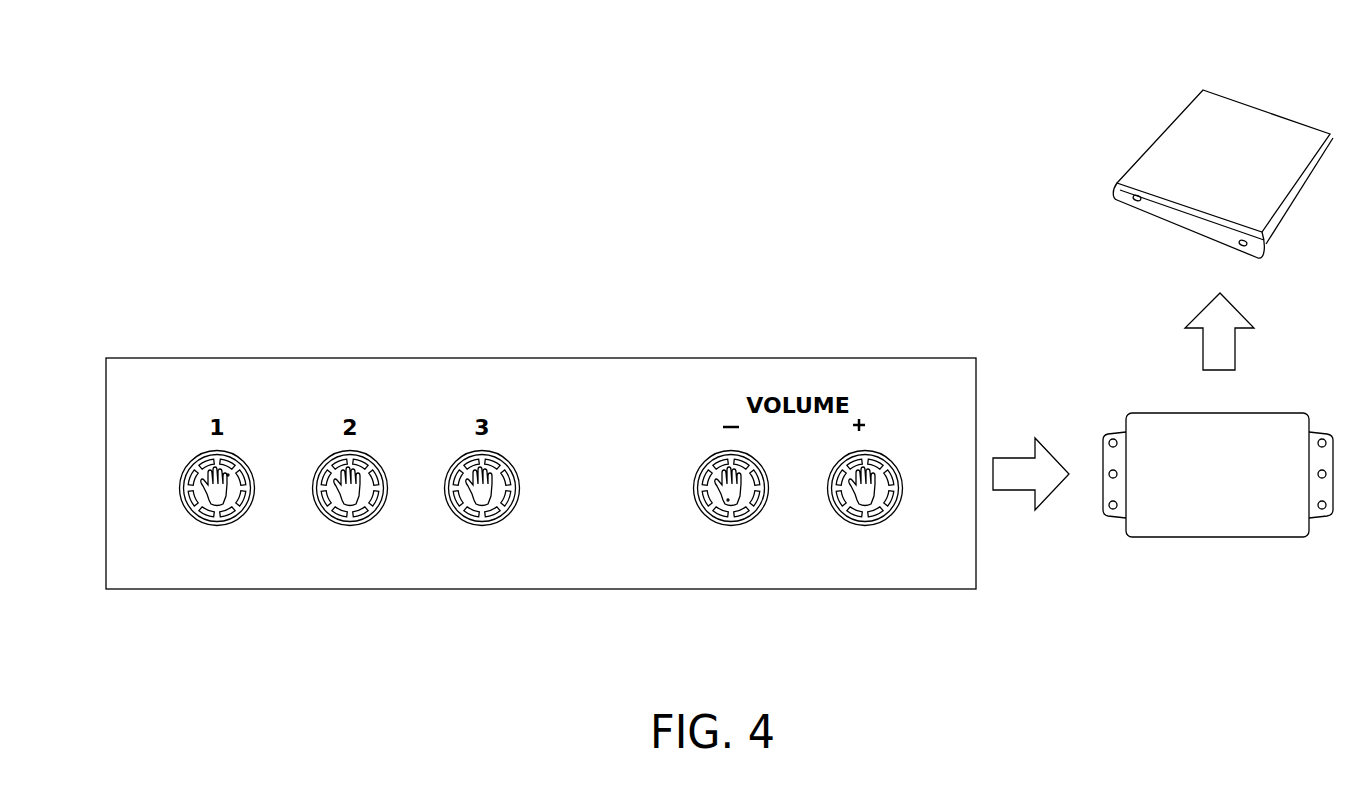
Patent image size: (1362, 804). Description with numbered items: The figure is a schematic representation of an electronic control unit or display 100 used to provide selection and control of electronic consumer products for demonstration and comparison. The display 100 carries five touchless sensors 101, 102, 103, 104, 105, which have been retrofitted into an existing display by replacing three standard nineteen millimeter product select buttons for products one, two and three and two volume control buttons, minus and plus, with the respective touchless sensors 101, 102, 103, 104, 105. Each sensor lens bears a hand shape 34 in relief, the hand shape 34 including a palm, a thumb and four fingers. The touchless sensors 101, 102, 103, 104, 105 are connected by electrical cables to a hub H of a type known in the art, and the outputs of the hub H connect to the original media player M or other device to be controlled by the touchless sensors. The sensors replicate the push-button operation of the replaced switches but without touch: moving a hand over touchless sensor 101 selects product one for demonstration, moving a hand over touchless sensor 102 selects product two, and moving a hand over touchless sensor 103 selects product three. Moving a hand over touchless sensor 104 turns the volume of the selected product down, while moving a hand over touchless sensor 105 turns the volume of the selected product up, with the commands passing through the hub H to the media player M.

The electronic control unit or display 100 is at (628, 358).
The touchless sensor 101 is at (203, 523).
The touchless sensor 102 is at (357, 525).
The touchless sensor 103 is at (487, 525).
The touchless sensor 104 is at (745, 523).
The touchless sensor 105 is at (877, 523).
The hand shape 34 is at (228, 475).
The hub H is at (1226, 508).
The media player M is at (1185, 153).